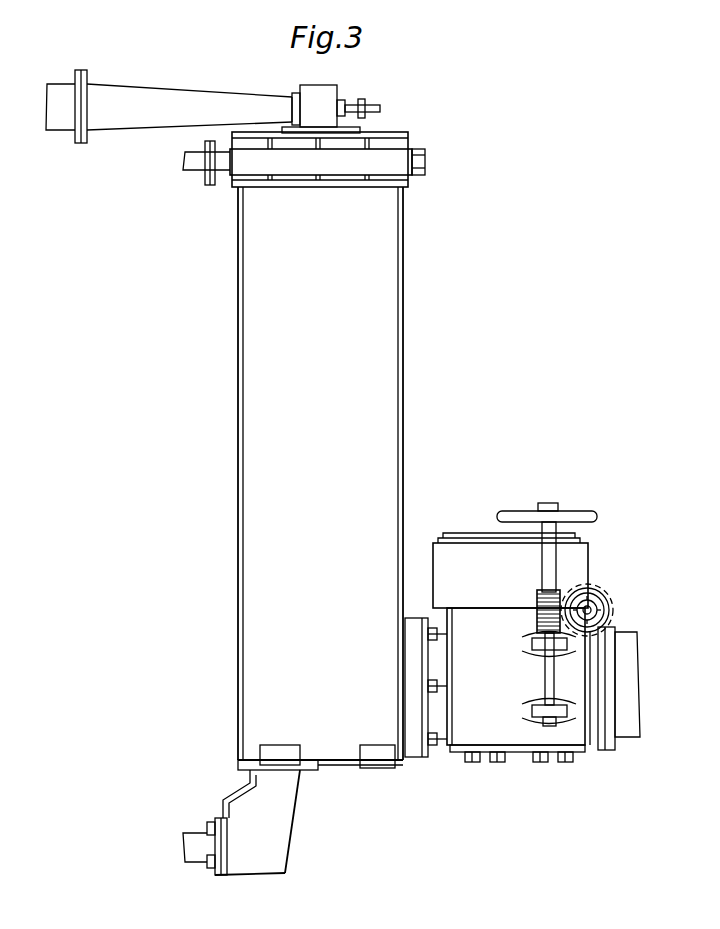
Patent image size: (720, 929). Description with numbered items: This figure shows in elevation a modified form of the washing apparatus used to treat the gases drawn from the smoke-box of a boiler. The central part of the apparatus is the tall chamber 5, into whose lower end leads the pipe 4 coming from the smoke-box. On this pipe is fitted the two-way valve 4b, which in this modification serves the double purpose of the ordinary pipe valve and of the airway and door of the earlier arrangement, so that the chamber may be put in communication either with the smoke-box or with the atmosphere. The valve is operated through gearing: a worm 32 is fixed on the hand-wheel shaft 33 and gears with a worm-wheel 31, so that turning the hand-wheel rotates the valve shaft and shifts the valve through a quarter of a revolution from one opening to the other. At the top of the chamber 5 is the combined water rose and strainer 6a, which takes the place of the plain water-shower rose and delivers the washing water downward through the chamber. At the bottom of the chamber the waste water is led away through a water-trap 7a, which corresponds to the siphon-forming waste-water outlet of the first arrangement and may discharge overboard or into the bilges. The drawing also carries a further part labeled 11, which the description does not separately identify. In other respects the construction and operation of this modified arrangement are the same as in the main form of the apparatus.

The tapered inlet horn 11 is at (213, 106).
The combined water rose and strainer 6a is at (304, 159).
The chamber 5 is at (320, 478).
The water-trap 7a is at (241, 822).
The hand-wheel shaft 33 is at (510, 570).
The worm 32 is at (540, 616).
The worm-wheel 31 is at (600, 596).
The two-way valve 4b is at (510, 685).
The pipe 4 is at (633, 684).